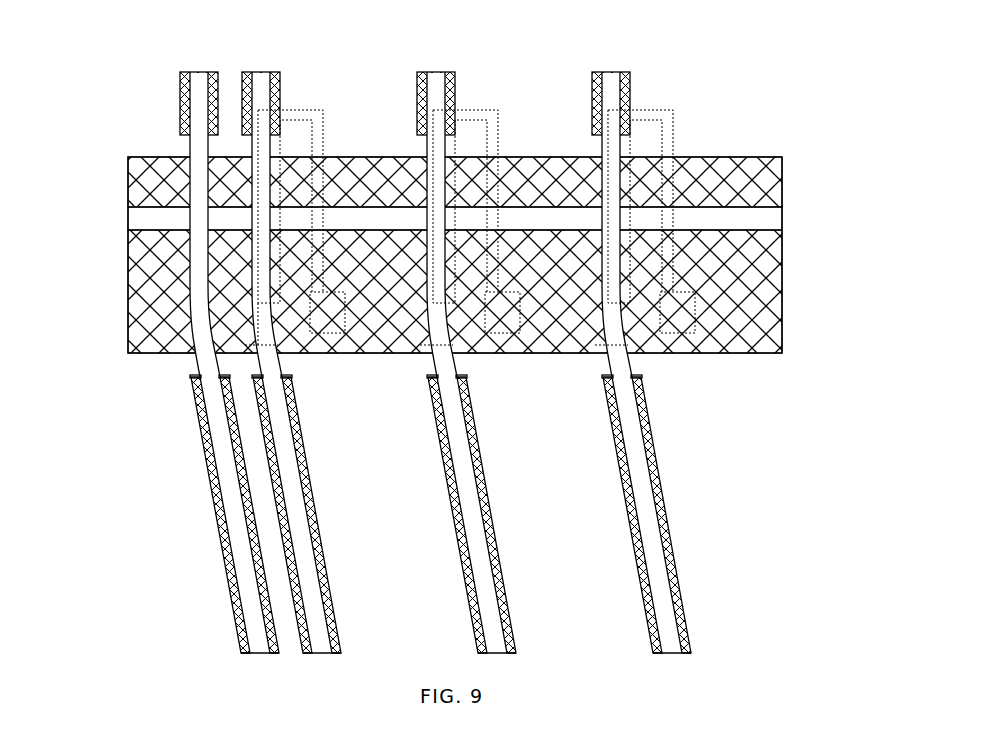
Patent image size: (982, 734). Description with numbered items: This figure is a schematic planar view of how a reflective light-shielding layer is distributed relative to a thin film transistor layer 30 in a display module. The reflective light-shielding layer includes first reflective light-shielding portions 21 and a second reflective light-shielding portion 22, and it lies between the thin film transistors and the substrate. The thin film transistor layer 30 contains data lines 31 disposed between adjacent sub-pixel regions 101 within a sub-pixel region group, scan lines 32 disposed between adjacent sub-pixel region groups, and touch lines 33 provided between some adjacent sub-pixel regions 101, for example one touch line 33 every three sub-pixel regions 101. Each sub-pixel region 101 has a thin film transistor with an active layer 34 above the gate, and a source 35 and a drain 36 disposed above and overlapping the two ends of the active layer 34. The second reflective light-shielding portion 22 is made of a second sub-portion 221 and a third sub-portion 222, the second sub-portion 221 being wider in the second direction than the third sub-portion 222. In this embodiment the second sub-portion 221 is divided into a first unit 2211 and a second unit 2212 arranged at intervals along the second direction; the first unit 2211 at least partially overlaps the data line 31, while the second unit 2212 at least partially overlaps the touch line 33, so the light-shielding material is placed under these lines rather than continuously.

The first reflective light-shielding portion 21 is at (752, 180).
The scan line 32 is at (710, 220).
The thin film transistor layer 30 is at (377, 285).
The touch line 33 is at (150, 349).
The data line 31 is at (191, 347).
The active layer 34 is at (263, 243).
The source 35 is at (263, 327).
The drain 36 is at (327, 310).
The second reflective light-shielding portion 22 is at (448, 127).
The third sub-portion 222 is at (485, 348).
The second sub-portion 221 is at (150, 514).
The first unit 2211 is at (280, 512).
The second unit 2212 is at (232, 562).
The sub-pixel region 101 is at (577, 437).